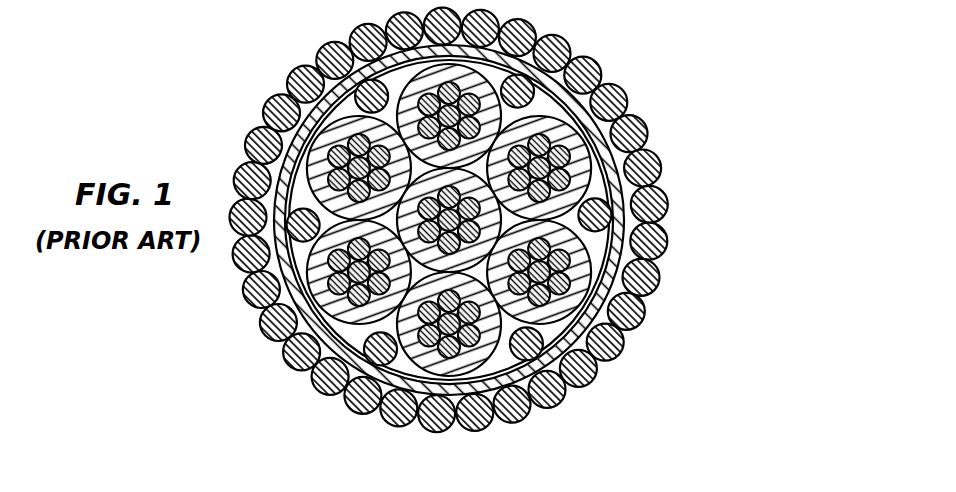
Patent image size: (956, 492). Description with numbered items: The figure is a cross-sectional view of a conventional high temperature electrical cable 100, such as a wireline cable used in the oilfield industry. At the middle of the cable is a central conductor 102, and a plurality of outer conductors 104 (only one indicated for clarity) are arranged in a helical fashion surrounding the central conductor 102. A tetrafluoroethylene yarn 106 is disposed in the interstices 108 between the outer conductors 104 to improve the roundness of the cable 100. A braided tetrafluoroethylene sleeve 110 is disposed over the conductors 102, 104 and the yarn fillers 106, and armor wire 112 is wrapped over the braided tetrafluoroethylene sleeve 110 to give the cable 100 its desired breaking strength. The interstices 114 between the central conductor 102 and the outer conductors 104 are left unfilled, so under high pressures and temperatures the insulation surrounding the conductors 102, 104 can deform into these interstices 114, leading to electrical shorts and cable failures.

The cable 100 is at (697, 88).
The central conductor 102 is at (647, 318).
The outer conductors 104 is at (662, 177).
The tetrafluoroethylene yarn 106 is at (313, 60).
The interstices 108 is at (258, 145).
The braided tetrafluoroethylene sleeve 110 is at (620, 248).
The armor wire 112 is at (600, 68).
The interstices 114 is at (310, 373).